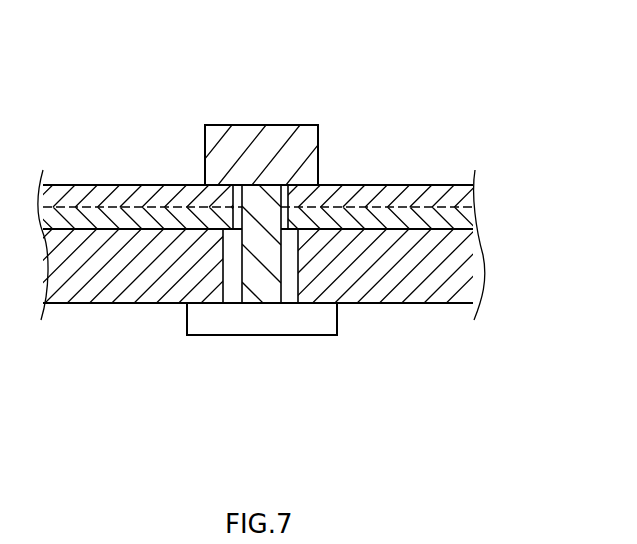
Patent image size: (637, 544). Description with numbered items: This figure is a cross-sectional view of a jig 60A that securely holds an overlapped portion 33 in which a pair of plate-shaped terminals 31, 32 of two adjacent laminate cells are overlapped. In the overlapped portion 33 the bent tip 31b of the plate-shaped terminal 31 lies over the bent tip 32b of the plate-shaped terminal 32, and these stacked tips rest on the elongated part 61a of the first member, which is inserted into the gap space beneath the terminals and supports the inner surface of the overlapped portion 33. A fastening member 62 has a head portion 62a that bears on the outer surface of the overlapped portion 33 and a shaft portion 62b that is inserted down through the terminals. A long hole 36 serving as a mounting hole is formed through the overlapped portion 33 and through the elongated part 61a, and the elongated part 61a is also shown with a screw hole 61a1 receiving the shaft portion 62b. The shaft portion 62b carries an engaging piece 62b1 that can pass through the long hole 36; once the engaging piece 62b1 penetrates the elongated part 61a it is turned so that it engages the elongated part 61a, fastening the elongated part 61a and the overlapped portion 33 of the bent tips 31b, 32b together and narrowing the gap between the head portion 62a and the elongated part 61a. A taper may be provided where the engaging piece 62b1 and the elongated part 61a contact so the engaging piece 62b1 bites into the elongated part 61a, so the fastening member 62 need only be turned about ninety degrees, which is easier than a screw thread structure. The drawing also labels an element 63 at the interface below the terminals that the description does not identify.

The jig 60A is at (279, 219).
The fastening member 62 is at (259, 233).
The head portion 62a is at (258, 125).
The shaft portion 62b is at (282, 277).
The engaging piece 62b1 is at (320, 336).
The long hole 36 is at (238, 176).
The overlapped portion 33 is at (273, 211).
The plate-shaped terminal 31 is at (265, 217).
The bent tip 31b is at (438, 185).
The plate-shaped terminal 32 is at (273, 266).
The bent tip 32b is at (435, 232).
The joint layer 63 is at (208, 305).
The elongated part 61a is at (300, 311).
The screw hole 61a1 is at (237, 305).